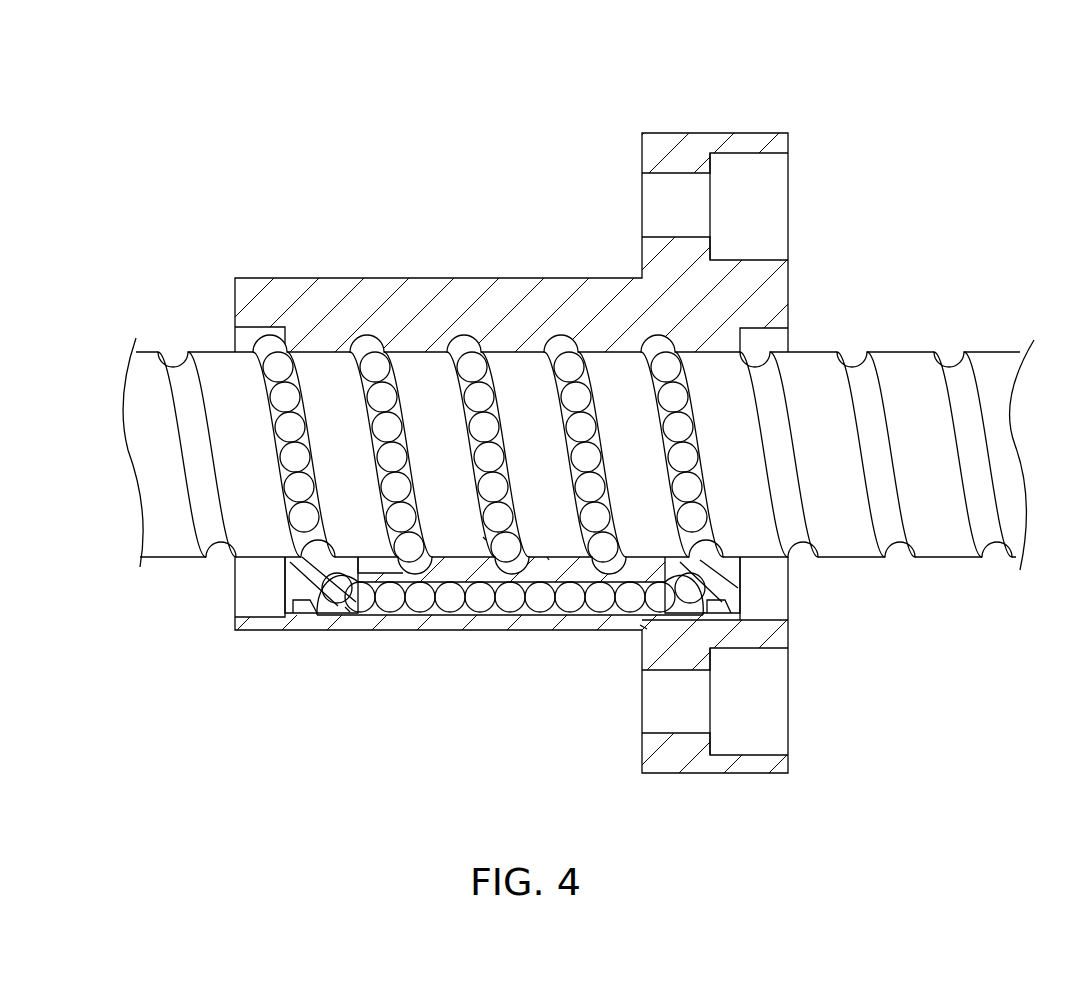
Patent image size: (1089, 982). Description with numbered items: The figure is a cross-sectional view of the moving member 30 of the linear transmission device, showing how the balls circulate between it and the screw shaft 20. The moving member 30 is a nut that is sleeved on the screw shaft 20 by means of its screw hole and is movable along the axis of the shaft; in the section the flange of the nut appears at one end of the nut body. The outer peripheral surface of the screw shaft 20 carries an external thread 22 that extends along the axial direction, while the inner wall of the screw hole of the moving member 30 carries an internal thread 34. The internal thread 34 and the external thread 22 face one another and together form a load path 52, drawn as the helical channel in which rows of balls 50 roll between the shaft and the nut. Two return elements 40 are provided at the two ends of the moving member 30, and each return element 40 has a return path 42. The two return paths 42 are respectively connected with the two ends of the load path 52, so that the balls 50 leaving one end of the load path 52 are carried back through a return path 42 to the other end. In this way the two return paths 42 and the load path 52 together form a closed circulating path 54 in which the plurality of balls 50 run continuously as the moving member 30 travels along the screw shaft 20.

The screw shaft 20 is at (921, 330).
The external thread 22 is at (483, 537).
The moving member 30 is at (737, 117).
The internal thread 34 is at (547, 557).
The return element 40 is at (293, 577).
The return path 42 is at (345, 607).
The ball 50 is at (479, 369).
The load path 52 is at (518, 682).
The circulating path 54 is at (607, 723).